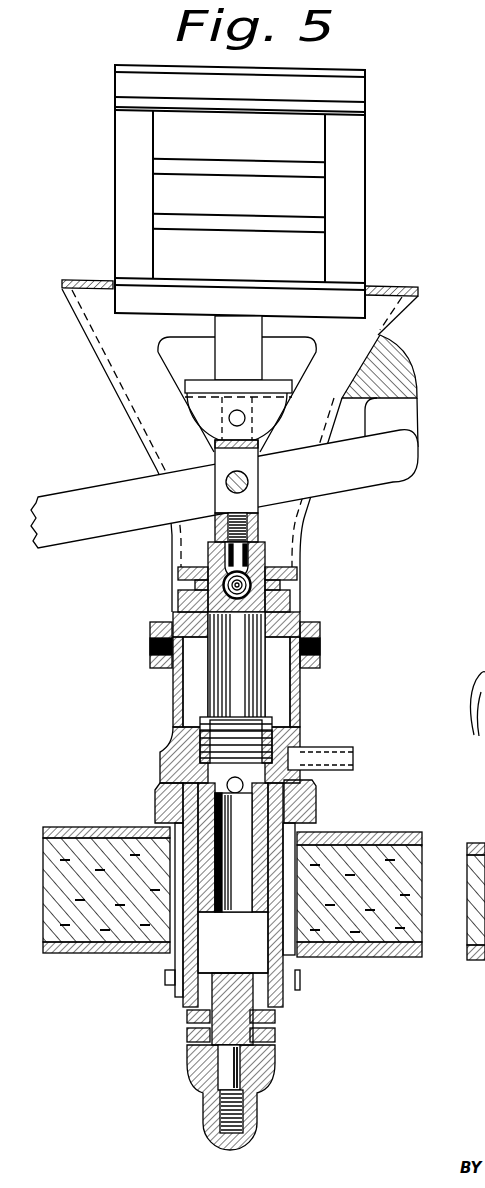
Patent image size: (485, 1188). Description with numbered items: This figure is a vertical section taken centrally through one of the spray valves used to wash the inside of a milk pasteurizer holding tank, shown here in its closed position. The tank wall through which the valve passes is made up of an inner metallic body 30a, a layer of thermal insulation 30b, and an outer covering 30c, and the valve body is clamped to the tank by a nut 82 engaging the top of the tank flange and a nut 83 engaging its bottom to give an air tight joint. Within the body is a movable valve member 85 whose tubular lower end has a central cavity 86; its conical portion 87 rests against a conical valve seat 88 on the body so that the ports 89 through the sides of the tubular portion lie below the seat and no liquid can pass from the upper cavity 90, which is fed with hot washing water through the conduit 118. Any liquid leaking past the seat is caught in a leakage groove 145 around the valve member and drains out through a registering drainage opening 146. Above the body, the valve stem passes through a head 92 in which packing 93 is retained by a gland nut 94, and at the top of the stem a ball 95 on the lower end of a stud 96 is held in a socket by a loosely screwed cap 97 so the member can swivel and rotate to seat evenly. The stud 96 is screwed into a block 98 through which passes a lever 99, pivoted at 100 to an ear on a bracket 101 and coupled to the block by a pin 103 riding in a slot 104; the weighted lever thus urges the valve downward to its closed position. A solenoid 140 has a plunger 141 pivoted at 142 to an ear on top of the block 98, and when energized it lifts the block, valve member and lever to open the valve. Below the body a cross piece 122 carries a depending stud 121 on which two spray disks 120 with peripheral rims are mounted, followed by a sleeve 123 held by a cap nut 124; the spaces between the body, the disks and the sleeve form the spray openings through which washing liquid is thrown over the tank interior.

The solenoid 140 is at (300, 140).
The plunger 141 is at (250, 370).
The pivot 142 is at (246, 418).
The bracket 101 is at (128, 408).
The pivot 100 is at (402, 455).
The pin 103 is at (259, 472).
The slot 104 is at (226, 482).
The lever 99 is at (122, 525).
The block 98 is at (262, 522).
The stud 96 is at (262, 540).
The cap 97 is at (264, 562).
The gland nut 94 is at (178, 573).
The head 92 is at (176, 601).
The ball 95 is at (298, 575).
The packing 93 is at (300, 608).
The conduit 118 is at (190, 690).
The upper cavity 90 is at (278, 692).
The valve seat 88 is at (272, 728).
The drainage opening 146 is at (322, 752).
The conical portion 87 is at (172, 746).
The leakage groove 145 is at (200, 758).
The ports 89 is at (245, 786).
The nut 82 is at (316, 803).
The outer covering 30c is at (70, 830).
The inner metallic body 30a is at (70, 955).
The layer of thermal insulation 30b is at (388, 935).
The valve member 85 is at (227, 877).
The central cavity 86 is at (242, 905).
The nut 83 is at (292, 985).
The cross piece 122 is at (194, 1005).
The spray disks 120 is at (276, 1036).
The stud 121 is at (228, 1062).
The sleeve 123 is at (258, 1083).
The cap nut 124 is at (246, 1112).